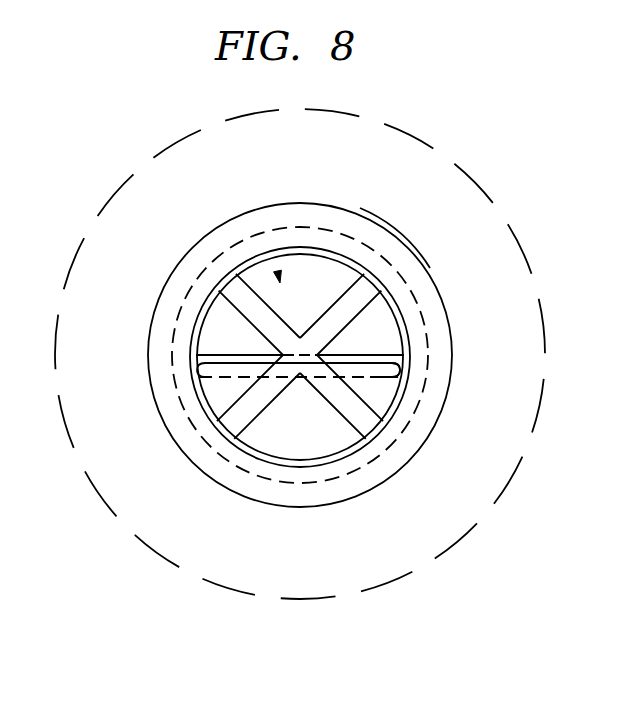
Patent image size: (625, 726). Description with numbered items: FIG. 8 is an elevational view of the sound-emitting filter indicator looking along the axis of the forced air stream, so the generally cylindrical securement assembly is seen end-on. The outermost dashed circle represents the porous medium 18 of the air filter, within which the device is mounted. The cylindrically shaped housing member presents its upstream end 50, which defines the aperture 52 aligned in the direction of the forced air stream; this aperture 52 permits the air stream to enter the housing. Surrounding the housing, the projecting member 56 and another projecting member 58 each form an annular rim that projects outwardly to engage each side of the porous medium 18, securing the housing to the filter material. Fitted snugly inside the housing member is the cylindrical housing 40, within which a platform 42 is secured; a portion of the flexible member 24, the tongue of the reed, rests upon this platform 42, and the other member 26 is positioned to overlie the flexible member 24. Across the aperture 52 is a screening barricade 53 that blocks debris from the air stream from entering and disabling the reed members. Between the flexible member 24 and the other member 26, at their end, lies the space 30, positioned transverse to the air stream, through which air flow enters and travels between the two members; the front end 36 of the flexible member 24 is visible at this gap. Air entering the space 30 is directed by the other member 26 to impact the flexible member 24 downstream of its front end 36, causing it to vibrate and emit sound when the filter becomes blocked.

The porous medium 18 is at (118, 237).
The end of housing member 50 is at (148, 352).
The another projecting member 58 is at (393, 238).
The projecting member 56 is at (413, 297).
The cylindrical housing 40 is at (326, 452).
The screening barricade 53 is at (238, 295).
The other member 26 is at (308, 278).
The aperture 52 is at (278, 272).
The platform 42 is at (290, 437).
The space 30 is at (215, 359).
The front end 36 is at (370, 372).
The flexible member 24 is at (362, 379).